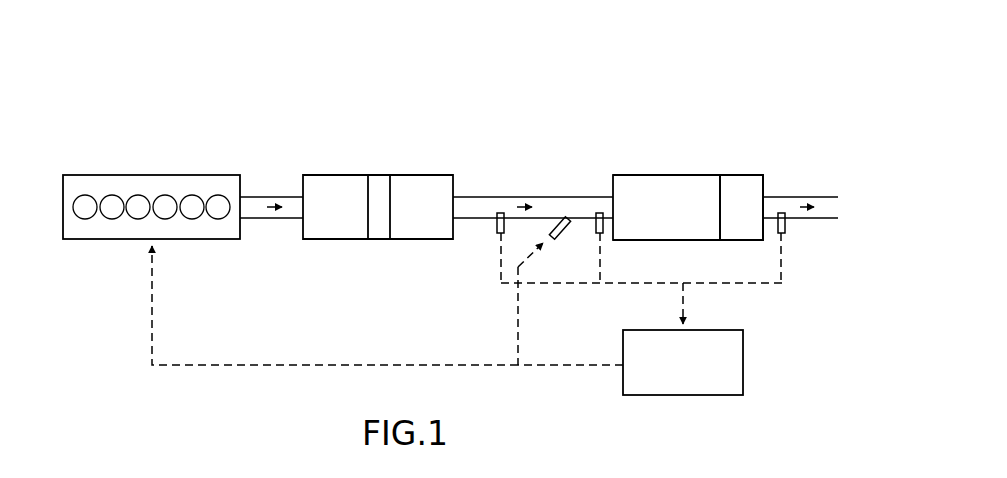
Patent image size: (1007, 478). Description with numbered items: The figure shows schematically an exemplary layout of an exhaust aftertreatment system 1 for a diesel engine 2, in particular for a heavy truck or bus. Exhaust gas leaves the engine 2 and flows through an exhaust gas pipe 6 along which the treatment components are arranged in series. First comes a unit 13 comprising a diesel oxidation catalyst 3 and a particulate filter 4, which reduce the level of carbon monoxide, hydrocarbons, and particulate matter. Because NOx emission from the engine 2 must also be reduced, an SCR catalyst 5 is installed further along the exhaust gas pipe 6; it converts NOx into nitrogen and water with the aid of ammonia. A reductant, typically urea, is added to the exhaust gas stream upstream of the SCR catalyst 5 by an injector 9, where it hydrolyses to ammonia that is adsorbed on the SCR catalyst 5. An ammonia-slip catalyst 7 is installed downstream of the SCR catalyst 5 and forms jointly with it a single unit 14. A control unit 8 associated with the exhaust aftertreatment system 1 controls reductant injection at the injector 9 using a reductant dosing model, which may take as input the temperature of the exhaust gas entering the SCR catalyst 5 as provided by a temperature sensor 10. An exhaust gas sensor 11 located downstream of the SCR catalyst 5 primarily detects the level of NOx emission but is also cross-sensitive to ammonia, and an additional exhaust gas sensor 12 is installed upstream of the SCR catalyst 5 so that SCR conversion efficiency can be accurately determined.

The exhaust aftertreatment system 1 is at (650, 58).
The diesel engine 2 is at (173, 175).
The diesel oxidation catalyst 3 is at (335, 207).
The particulate filter 4 is at (421, 207).
The SCR catalyst 5 is at (666, 207).
The exhaust gas pipe 6 is at (512, 197).
The ammonia-slip catalyst 7 is at (741, 207).
The control unit 8 is at (467, 320).
The injector 9 is at (557, 238).
The temperature sensor 10 is at (605, 236).
The exhaust gas sensor 11 is at (787, 236).
The additional exhaust gas sensor 12 is at (500, 236).
The unit 13 is at (385, 175).
The single unit 14 is at (710, 175).